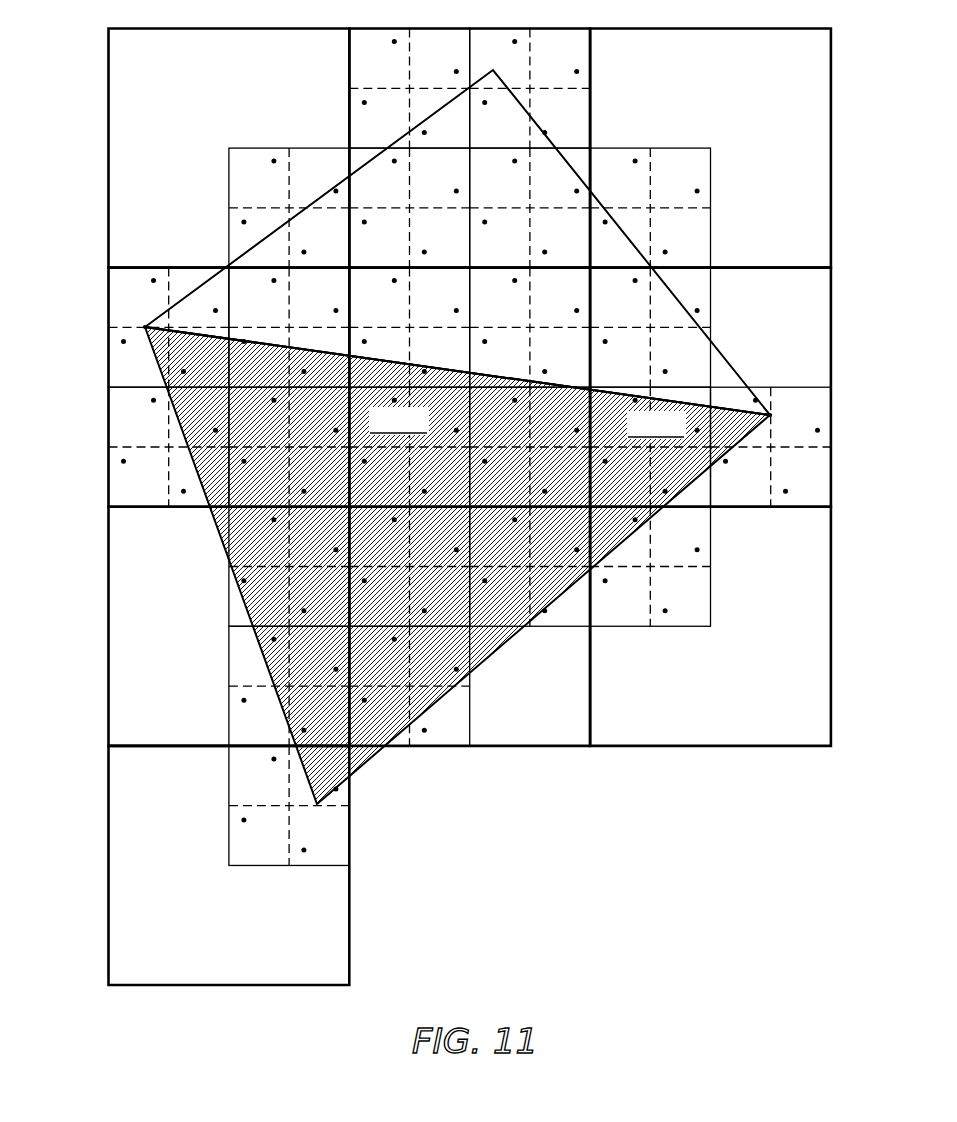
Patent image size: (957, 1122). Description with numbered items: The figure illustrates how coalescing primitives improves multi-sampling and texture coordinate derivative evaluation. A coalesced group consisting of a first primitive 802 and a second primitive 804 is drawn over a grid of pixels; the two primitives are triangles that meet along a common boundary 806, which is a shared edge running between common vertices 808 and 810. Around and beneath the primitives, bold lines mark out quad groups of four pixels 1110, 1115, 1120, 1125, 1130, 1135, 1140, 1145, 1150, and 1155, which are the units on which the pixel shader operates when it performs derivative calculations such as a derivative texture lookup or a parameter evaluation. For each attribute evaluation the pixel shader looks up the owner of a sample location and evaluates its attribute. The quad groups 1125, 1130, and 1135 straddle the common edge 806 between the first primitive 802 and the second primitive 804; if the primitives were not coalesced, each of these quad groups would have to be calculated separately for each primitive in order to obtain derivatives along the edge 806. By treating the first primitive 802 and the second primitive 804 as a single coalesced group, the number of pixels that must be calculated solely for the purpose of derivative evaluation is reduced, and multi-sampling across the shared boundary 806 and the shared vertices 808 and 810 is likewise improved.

The first primitive 802 is at (568, 163).
The second primitive 804 is at (500, 648).
The common boundary 806 is at (170, 331).
The common vertex 808 is at (145, 327).
The common vertex 810 is at (770, 415).
The quad group of four pixels 1110 is at (200, 105).
The quad group of four pixels 1115 is at (468, 63).
The quad group of four pixels 1120 is at (752, 79).
The quad group of four pixels 1125 is at (165, 438).
The quad group of four pixels 1130 is at (469, 387).
The quad group of four pixels 1135 is at (710, 387).
The quad group of four pixels 1140 is at (189, 653).
The quad group of four pixels 1145 is at (562, 725).
The quad group of four pixels 1150 is at (774, 698).
The quad group of four pixels 1155 is at (192, 885).